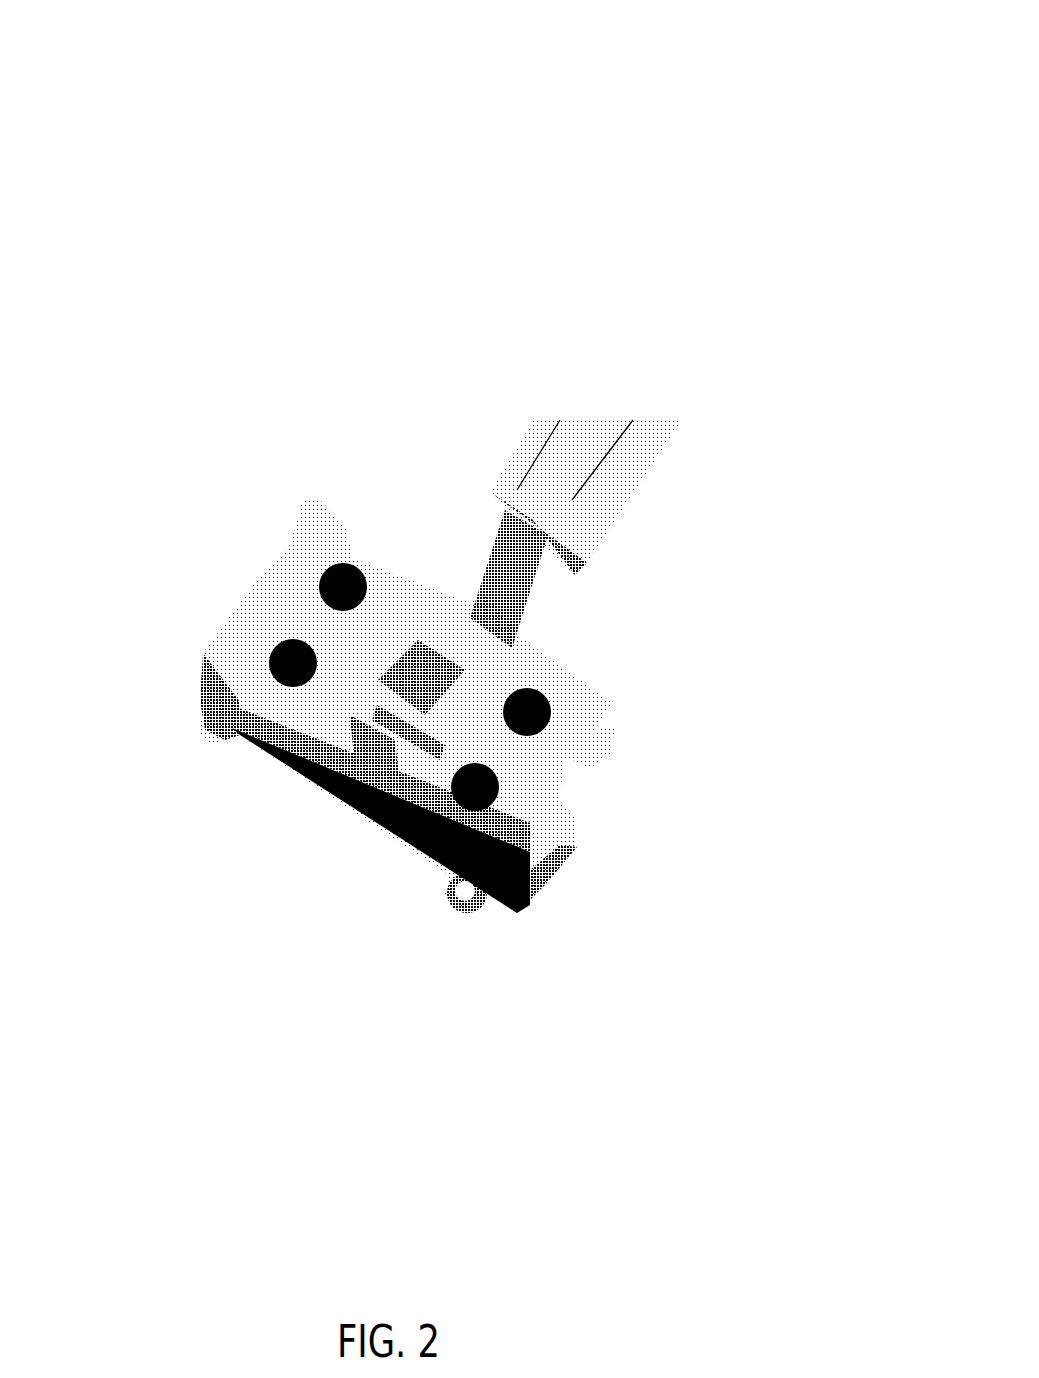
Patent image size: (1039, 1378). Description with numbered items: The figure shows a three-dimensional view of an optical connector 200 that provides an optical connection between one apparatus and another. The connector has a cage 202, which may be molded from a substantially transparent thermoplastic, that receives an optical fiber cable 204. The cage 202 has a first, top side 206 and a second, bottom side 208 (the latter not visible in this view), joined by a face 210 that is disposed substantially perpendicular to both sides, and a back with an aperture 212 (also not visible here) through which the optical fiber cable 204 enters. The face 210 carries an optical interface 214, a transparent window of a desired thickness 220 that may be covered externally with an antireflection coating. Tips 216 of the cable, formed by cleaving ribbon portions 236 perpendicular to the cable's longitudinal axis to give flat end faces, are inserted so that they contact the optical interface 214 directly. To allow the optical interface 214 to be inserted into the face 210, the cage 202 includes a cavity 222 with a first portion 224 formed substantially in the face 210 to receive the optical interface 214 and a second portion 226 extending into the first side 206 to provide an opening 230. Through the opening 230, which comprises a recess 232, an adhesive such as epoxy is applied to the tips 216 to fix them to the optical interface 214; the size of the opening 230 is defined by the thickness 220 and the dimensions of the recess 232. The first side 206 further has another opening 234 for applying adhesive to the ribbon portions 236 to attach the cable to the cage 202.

The optical connector 200 is at (547, 83).
The cage 202 is at (547, 880).
The optical fiber cable 204 is at (580, 453).
The first side 206 is at (590, 738).
The second side 208 is at (512, 930).
The face 210 is at (250, 741).
The aperture 212 is at (441, 533).
The optical interface 214 is at (348, 813).
The tips 216 is at (350, 745).
The thickness 220 is at (352, 755).
The cavity 222 is at (385, 770).
The first portion 224 is at (307, 777).
The second portion 226 is at (403, 747).
The opening 230 is at (366, 737).
The recess 232 is at (400, 742).
The another opening 234 is at (465, 668).
The ribbon portions 236 is at (410, 690).